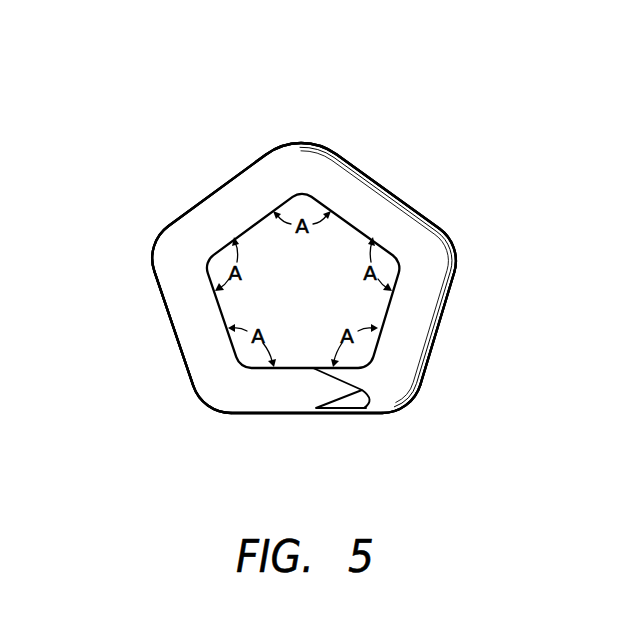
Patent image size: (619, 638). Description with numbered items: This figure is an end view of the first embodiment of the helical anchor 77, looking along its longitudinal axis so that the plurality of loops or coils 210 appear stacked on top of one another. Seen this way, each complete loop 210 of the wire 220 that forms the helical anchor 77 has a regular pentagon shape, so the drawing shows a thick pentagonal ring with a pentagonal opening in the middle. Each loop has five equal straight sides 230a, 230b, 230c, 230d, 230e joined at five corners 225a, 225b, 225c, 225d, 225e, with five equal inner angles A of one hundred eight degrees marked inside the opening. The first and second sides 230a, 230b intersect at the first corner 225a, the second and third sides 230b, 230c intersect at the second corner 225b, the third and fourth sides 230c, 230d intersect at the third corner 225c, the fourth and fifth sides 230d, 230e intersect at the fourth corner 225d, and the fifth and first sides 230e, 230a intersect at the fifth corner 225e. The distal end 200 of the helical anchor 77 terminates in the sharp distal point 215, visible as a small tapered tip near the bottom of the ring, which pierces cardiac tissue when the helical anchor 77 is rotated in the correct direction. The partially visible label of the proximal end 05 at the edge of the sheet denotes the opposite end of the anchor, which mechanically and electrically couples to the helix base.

The helical anchor 77 is at (201, 97).
The distal end 200 is at (120, 229).
The loops or coils 210 is at (383, 182).
The distal point 215 is at (364, 404).
The wire 220 is at (165, 330).
The first corner 225a is at (218, 408).
The second corner 225b is at (151, 258).
The third corner 225c is at (300, 145).
The fourth corner 225d is at (452, 258).
The fifth corner 225e is at (385, 402).
The first side 230a is at (303, 412).
The second side 230b is at (168, 308).
The third side 230c is at (207, 195).
The fourth side 230d is at (398, 190).
The fifth side 230e is at (438, 328).
The proximal end 05 is at (11, 449).